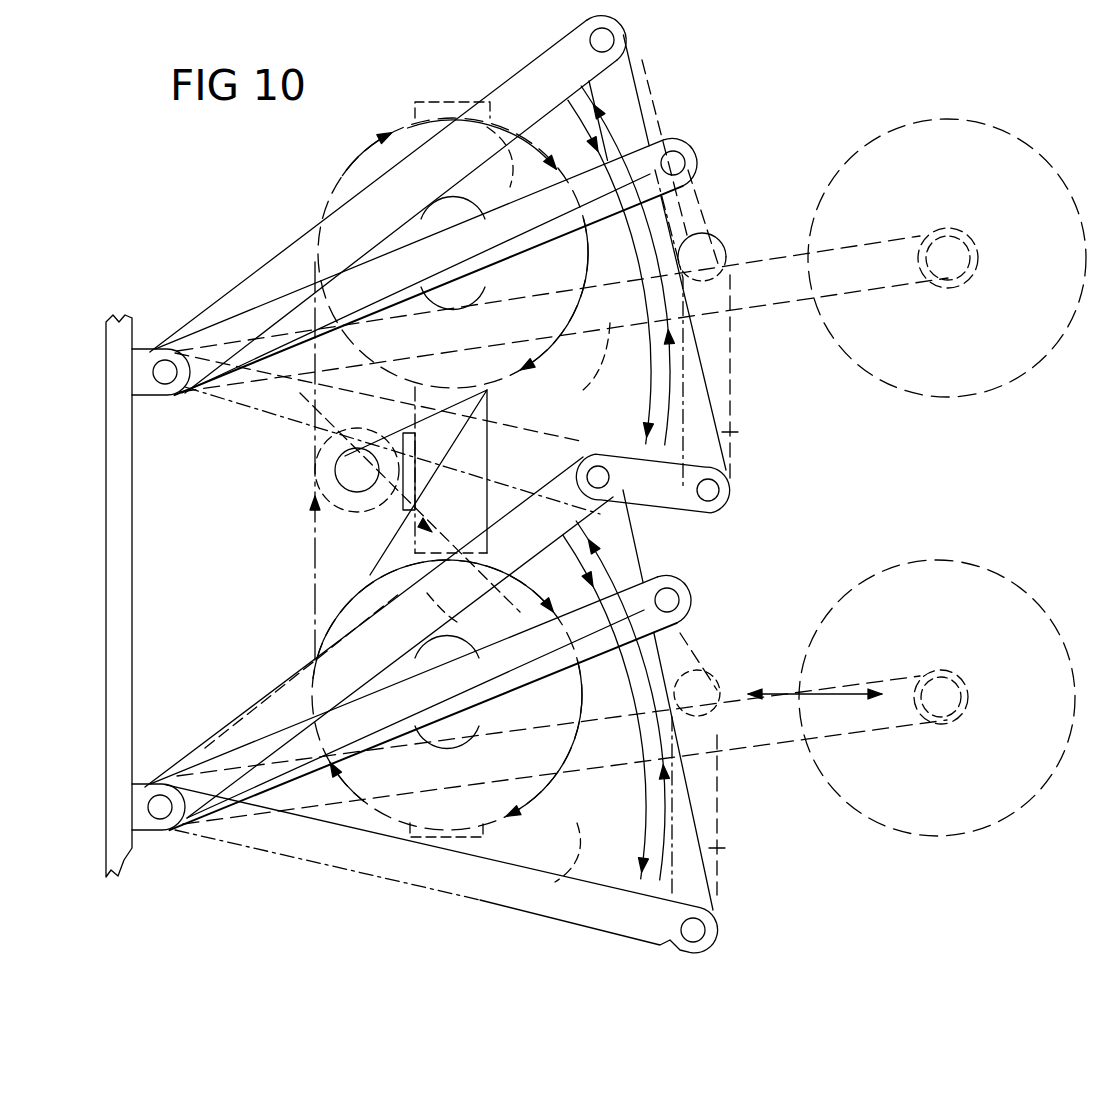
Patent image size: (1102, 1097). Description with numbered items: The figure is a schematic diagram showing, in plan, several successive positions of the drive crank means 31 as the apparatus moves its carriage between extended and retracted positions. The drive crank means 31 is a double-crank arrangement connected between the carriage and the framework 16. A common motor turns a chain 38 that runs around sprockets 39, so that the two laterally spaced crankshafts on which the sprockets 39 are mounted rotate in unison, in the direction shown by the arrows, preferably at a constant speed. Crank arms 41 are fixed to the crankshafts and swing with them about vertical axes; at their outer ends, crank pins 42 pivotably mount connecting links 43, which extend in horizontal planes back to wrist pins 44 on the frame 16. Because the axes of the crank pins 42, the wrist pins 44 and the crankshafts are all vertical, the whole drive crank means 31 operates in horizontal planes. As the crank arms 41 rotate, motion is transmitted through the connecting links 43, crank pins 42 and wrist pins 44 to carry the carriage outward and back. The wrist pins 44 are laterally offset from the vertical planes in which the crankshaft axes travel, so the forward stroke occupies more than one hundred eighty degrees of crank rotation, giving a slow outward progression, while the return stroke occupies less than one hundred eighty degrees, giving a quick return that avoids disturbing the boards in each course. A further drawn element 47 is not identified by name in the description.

The framework 16 is at (118, 490).
The drive crank means 31 is at (228, 316).
The chain 38 is at (315, 571).
The sprockets 39 is at (348, 178).
The crank arms 41 is at (866, 298).
The crank pins 42 is at (676, 163).
The connecting links 43 is at (516, 214).
The wrist pins 44 is at (152, 397).
The pivot link 47 is at (637, 98).